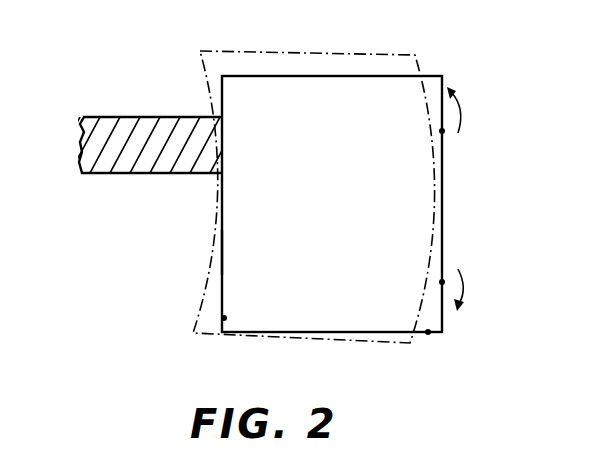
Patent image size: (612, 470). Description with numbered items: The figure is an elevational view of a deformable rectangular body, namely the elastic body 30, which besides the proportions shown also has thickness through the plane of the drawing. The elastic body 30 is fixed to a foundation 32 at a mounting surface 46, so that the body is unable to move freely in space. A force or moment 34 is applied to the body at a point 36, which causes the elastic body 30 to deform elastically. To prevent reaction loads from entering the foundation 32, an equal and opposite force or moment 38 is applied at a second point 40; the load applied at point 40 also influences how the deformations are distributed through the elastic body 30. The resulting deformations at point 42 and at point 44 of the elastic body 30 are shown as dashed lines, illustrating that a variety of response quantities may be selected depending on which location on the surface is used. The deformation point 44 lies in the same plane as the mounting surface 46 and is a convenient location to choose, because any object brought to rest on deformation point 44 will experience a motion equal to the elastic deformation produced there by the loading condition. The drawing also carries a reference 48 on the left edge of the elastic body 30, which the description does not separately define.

The panel 30 is at (352, 92).
The support member 32 is at (101, 126).
The rotation direction arrow 34 is at (461, 283).
The pivot point 36 is at (442, 282).
The rotation direction arrow 38 is at (456, 105).
The pivot point 40 is at (442, 131).
The bottom edge point 42 is at (428, 333).
The lower corner point 44 is at (224, 318).
The junction of support member and panel 46 is at (222, 136).
The left edge of panel 48 is at (222, 252).